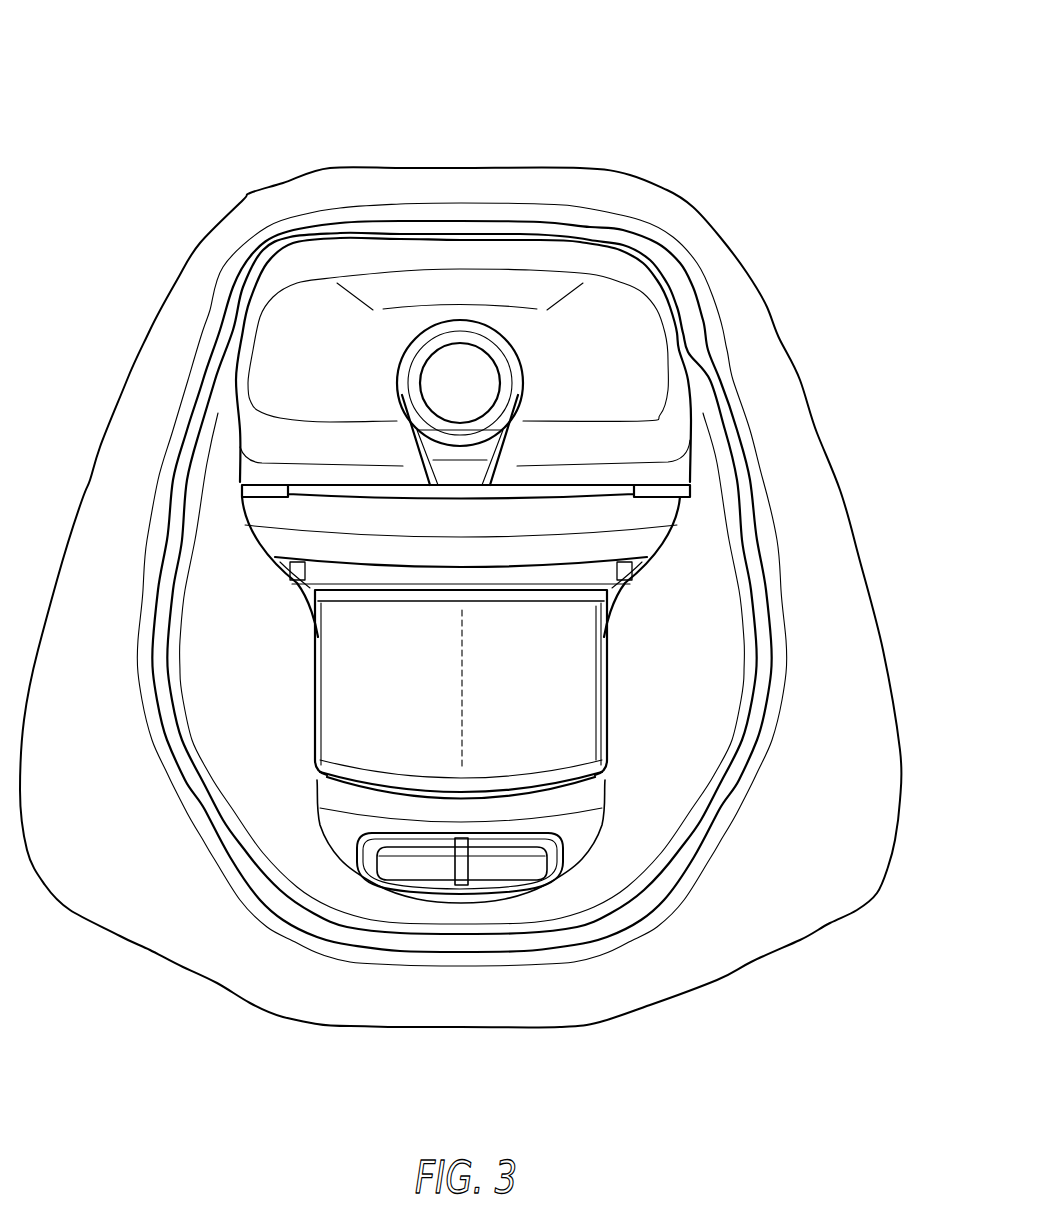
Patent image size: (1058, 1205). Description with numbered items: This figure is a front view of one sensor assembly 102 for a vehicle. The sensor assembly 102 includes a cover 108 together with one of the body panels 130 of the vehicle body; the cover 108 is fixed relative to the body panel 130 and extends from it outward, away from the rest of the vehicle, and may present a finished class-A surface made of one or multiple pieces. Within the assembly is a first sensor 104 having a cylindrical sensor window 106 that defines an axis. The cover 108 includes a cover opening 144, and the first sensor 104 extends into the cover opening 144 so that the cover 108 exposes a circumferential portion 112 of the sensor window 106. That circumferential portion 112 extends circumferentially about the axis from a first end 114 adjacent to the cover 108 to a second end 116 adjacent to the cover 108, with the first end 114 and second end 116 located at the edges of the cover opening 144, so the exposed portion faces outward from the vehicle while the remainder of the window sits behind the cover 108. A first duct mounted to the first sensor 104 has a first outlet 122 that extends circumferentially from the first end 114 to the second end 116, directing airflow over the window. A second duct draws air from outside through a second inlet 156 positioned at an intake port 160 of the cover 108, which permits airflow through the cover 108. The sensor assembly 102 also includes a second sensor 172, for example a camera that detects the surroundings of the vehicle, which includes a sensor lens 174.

The sensor assembly 102 is at (612, 108).
The first sensor 104 is at (570, 777).
The sensor window 106 is at (583, 673).
The cover 108 is at (700, 520).
The circumferential portion 112 is at (357, 715).
The first end 114 is at (310, 620).
The second end 116 is at (610, 623).
The first outlet 122 is at (412, 583).
The body panel 130 is at (820, 540).
The cover opening 144 is at (607, 700).
The second inlet 156 is at (507, 867).
The intake port 160 is at (557, 868).
The second sensor 172 is at (510, 353).
The sensor lens 174 is at (473, 387).